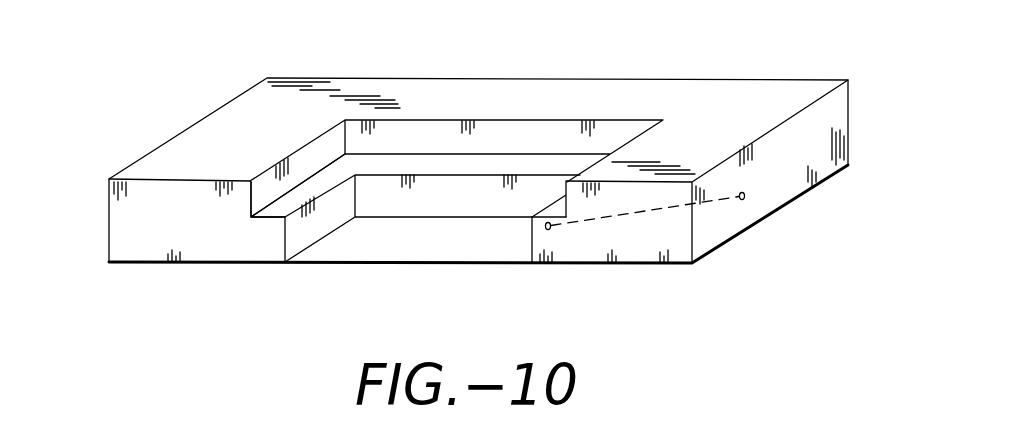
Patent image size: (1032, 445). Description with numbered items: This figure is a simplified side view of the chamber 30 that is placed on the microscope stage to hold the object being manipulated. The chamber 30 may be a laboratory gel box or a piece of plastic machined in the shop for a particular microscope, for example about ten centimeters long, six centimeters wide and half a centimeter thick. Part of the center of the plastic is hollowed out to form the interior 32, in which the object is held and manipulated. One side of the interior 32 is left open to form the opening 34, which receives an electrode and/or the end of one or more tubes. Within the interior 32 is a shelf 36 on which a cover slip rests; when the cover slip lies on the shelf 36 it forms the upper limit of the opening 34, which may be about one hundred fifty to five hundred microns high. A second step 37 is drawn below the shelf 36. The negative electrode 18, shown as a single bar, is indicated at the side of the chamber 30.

The chamber 30 is at (114, 122).
The interior 32 is at (420, 192).
The opening 34 is at (532, 240).
The shelf 36 is at (273, 208).
The lower step 37 is at (300, 233).
The negative electrode 18 is at (745, 196).